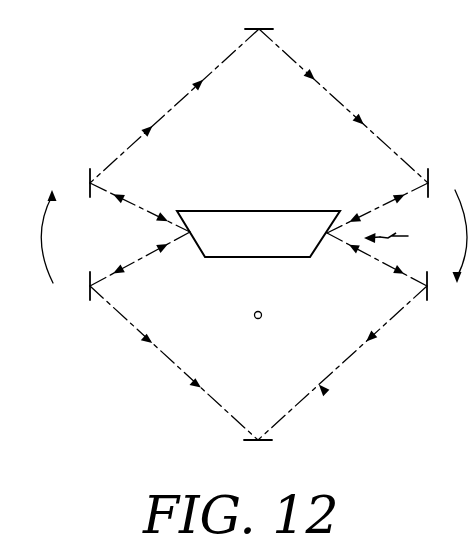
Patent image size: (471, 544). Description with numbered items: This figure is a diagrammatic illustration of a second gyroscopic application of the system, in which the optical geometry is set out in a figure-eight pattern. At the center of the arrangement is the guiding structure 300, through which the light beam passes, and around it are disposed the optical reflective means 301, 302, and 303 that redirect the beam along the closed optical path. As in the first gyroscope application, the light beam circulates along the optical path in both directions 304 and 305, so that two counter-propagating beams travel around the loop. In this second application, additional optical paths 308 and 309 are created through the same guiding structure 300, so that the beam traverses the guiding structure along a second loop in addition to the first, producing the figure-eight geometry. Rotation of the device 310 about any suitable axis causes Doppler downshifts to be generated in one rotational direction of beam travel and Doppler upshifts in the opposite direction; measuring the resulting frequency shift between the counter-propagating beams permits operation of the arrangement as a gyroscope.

The guiding structure 300 is at (258, 234).
The optical reflective means 301 is at (433, 300).
The optical reflective means 302 is at (262, 442).
The optical reflective means 303 is at (89, 284).
The direction of light beam circulation 304 is at (145, 336).
The direction of light beam circulation 305 is at (205, 393).
The additional optical path 308 is at (207, 77).
The additional optical path 309 is at (150, 128).
The rotation of the device 310 is at (408, 236).